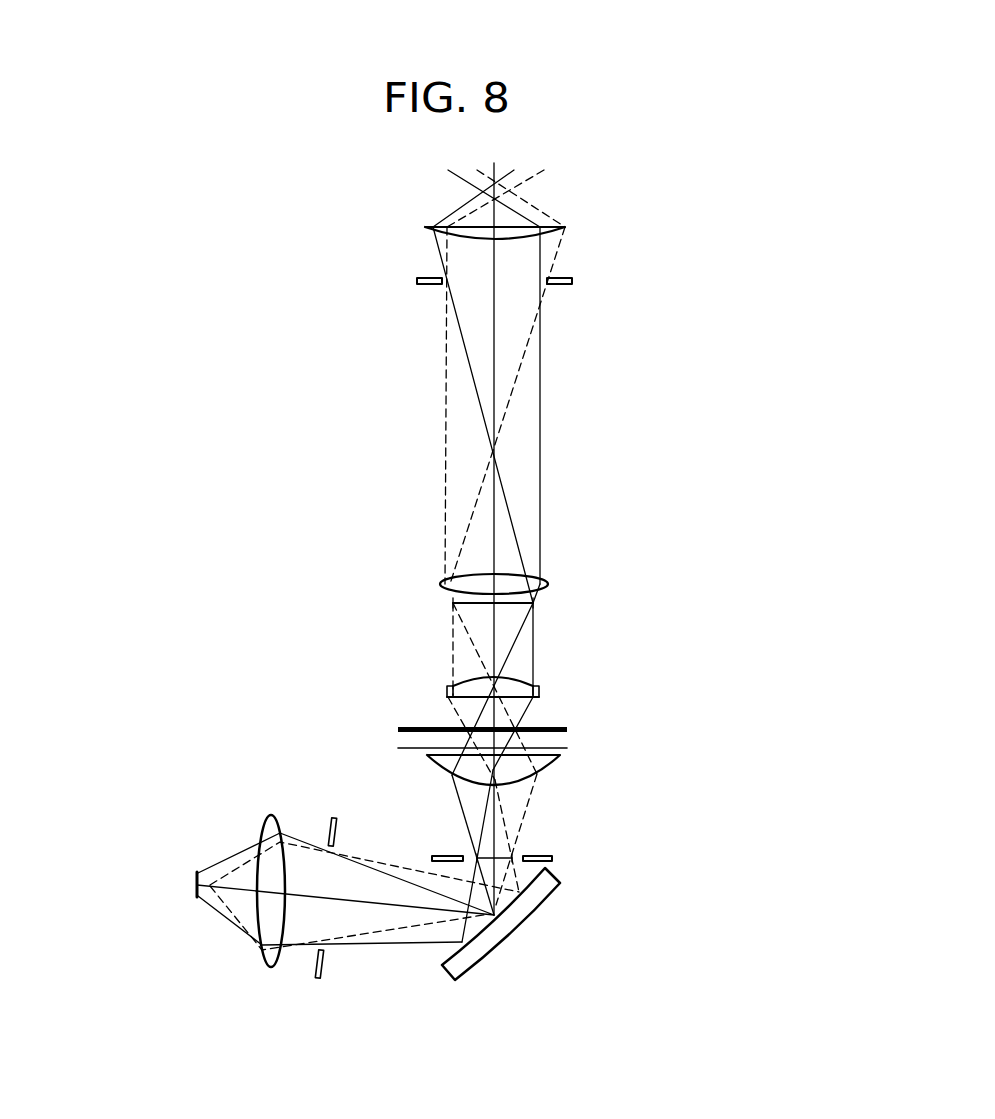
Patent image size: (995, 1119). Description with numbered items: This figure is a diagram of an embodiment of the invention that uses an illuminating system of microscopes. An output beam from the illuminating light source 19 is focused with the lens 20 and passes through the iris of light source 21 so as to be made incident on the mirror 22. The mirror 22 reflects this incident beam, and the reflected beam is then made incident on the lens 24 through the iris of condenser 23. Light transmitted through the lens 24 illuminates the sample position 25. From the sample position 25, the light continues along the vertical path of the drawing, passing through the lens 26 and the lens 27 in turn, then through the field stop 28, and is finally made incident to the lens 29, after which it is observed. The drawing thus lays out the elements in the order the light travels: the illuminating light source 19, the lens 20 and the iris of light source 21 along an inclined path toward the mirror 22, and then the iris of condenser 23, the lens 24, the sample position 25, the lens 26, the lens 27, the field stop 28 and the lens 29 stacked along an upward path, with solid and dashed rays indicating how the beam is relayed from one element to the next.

The illuminating light source 19 is at (197, 872).
The lens 20 is at (265, 957).
The iris of light source 21 is at (322, 975).
The mirror 22 is at (460, 960).
The iris of condenser 23 is at (543, 855).
The lens 24 is at (548, 762).
The sample position 25 is at (557, 727).
The lens 26 is at (540, 687).
The lens 27 is at (543, 582).
The field stop 28 is at (556, 279).
The lens 29 is at (522, 232).